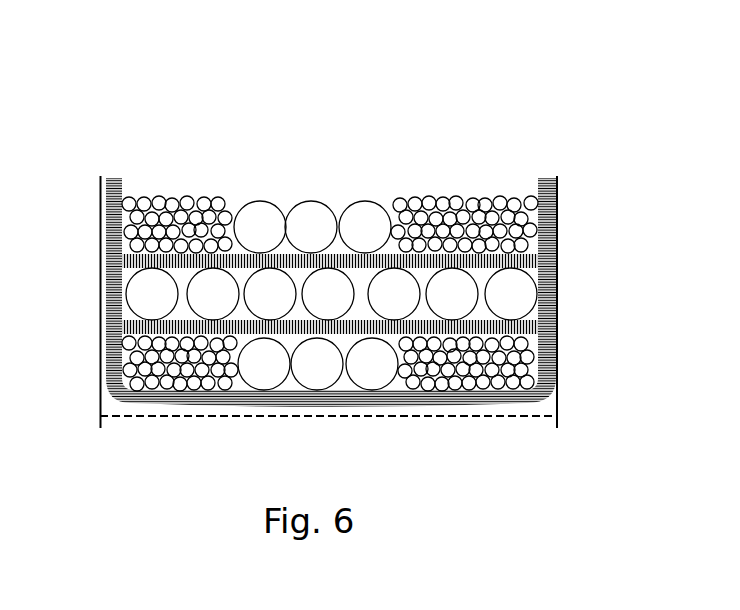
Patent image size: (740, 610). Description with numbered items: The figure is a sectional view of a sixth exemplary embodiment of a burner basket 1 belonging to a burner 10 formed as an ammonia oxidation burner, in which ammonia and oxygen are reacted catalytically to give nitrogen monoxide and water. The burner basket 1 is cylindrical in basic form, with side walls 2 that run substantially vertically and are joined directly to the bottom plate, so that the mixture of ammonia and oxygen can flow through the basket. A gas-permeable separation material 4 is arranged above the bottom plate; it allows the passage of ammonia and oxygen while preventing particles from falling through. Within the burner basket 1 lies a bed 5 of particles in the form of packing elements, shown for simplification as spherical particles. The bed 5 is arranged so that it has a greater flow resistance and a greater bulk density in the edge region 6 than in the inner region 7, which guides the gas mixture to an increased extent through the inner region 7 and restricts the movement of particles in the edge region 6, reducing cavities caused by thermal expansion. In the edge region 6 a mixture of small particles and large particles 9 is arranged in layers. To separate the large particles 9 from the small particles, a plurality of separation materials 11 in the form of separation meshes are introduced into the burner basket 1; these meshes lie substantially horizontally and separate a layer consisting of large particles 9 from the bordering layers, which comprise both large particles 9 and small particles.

The burner basket 1 is at (560, 163).
The side walls 2 is at (557, 241).
The separation material 4 is at (557, 302).
The bed 5 is at (338, 125).
The edge region 6 is at (171, 170).
The inner region 7 is at (289, 170).
The large particles 9 is at (313, 228).
The burner 10 is at (385, 70).
The separation materials 11 is at (515, 258).